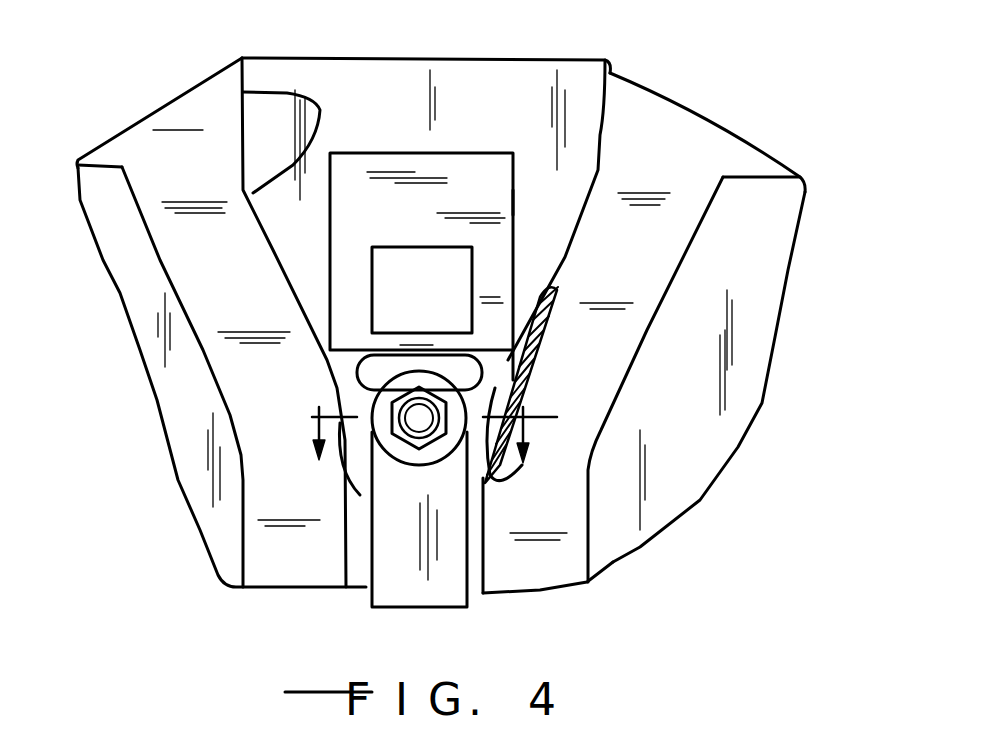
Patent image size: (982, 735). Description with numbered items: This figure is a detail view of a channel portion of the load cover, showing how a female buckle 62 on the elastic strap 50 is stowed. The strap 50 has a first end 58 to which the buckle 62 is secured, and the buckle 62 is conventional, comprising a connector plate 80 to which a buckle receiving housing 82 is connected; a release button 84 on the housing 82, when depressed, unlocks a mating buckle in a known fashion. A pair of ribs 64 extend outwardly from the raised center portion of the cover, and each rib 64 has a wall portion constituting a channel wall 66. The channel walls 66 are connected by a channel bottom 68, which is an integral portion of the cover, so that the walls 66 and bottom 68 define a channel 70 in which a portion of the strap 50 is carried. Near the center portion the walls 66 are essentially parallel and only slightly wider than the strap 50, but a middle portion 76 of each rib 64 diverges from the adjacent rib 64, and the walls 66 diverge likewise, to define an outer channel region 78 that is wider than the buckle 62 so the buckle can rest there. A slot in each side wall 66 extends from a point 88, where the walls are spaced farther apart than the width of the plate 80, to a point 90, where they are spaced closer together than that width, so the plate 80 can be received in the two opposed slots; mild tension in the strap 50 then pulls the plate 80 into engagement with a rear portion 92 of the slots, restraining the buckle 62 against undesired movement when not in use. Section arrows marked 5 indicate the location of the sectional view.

The bolt shaft 50 is at (466, 597).
The lower surface 58 is at (483, 518).
The central block 62 is at (513, 202).
The wing 64 is at (239, 428).
The ramp surface 66 is at (610, 252).
The lower body portion 68 is at (362, 538).
The housing body 70 is at (549, 59).
The wing surface 76 is at (167, 273).
The top surface 78 is at (503, 117).
The nut 80 is at (470, 468).
The rectangular boss 82 is at (513, 173).
The square recess 84 is at (440, 310).
The slot 88 is at (498, 345).
The curved surface 90 is at (523, 427).
The clamping face 92 is at (360, 495).
The section line 5 is at (431, 457).